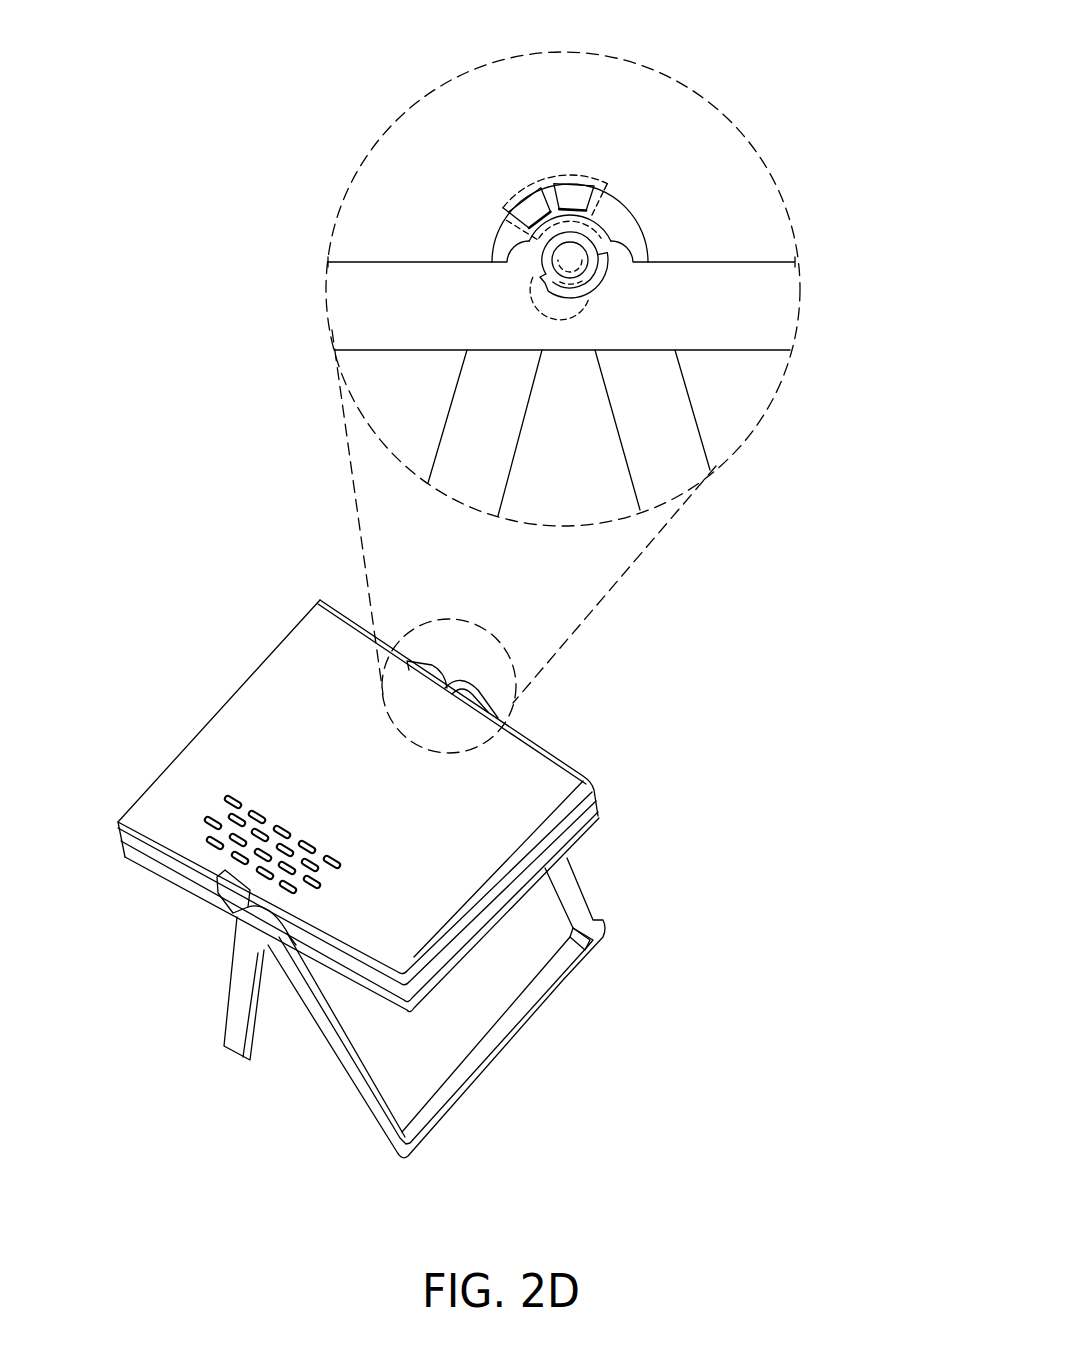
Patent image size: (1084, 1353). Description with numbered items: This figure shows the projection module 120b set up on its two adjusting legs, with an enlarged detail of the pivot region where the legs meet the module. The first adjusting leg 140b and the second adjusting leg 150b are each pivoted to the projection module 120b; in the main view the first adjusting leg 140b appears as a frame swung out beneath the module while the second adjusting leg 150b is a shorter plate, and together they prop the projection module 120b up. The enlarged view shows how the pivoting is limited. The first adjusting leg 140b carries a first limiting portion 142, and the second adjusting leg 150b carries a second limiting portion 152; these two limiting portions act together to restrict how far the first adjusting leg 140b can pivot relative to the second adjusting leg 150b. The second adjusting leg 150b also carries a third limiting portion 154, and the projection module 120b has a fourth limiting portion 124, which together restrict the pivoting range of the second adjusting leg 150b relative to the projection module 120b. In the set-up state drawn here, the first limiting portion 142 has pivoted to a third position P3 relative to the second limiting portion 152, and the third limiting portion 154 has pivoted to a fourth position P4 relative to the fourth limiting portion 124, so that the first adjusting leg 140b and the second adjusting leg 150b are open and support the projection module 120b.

The projection module 120b is at (783, 303).
The fourth limiting portion 124 is at (593, 250).
The first limiting portion 142 is at (543, 213).
The second limiting portion 152 is at (575, 197).
The third limiting portion 154 is at (560, 254).
The first adjusting leg 140b is at (468, 413).
The second adjusting leg 150b is at (665, 418).
The third position P3 is at (566, 172).
The fourth position P4 is at (533, 298).